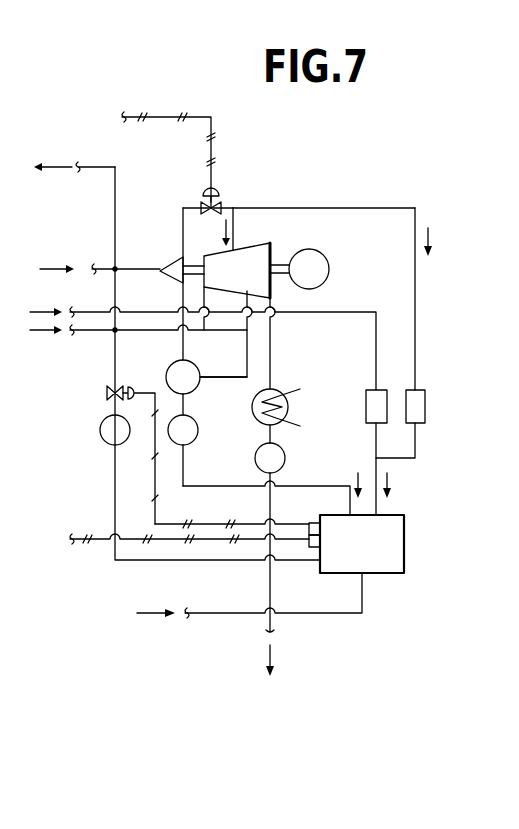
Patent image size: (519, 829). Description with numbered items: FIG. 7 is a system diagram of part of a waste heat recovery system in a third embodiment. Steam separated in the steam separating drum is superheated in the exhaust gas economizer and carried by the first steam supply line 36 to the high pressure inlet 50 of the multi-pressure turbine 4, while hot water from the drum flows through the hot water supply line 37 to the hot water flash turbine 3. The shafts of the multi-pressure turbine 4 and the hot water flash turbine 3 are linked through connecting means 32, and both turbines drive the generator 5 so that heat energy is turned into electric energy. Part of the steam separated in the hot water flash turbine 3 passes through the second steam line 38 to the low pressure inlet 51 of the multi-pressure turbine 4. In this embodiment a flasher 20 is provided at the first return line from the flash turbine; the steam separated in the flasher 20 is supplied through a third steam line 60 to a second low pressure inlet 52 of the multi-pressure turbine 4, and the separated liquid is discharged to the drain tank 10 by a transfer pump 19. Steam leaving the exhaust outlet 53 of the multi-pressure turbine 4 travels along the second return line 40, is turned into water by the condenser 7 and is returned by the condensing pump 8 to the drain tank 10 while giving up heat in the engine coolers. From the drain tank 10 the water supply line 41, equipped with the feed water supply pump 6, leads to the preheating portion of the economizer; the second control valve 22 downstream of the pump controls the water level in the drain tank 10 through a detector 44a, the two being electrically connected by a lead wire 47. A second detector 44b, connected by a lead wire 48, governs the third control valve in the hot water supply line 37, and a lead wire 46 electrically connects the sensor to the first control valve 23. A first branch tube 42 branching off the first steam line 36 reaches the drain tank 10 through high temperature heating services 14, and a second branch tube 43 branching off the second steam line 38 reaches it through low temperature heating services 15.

The hot water flash turbine 3 is at (172, 262).
The multi-pressure turbine 4 is at (262, 243).
The generator 5 is at (328, 264).
The feed water supply pump 6 is at (100, 431).
The condenser 7 is at (298, 405).
The condensing pump 8 is at (285, 458).
The drain tank 10 is at (395, 538).
The high temperature heating services 14 is at (366, 390).
The low temperature heating services 15 is at (425, 406).
The transfer pump 19 is at (197, 440).
The flasher 20 is at (195, 372).
The second control valve 22 is at (106, 393).
The first control valve 23 is at (217, 194).
The connecting means 32 is at (197, 262).
The first steam supply line 36 is at (86, 334).
The hot water supply line 37 is at (100, 267).
The second steam line 38 is at (188, 208).
The second return line 40 is at (268, 582).
The water supply line 41 is at (115, 207).
The first branch tube 42 is at (88, 312).
The second branch tube 43 is at (415, 284).
The detector 44a is at (322, 529).
The detector 44b is at (313, 548).
The lead wire 46 is at (158, 116).
The lead wire 47 is at (158, 515).
The lead wire 48 is at (92, 538).
The high pressure inlet 50 is at (204, 290).
The low pressure inlet 51 is at (238, 246).
The second low pressure inlet 52 is at (254, 293).
The exhaust outlet 53 is at (278, 292).
The third steam line 60 is at (232, 378).